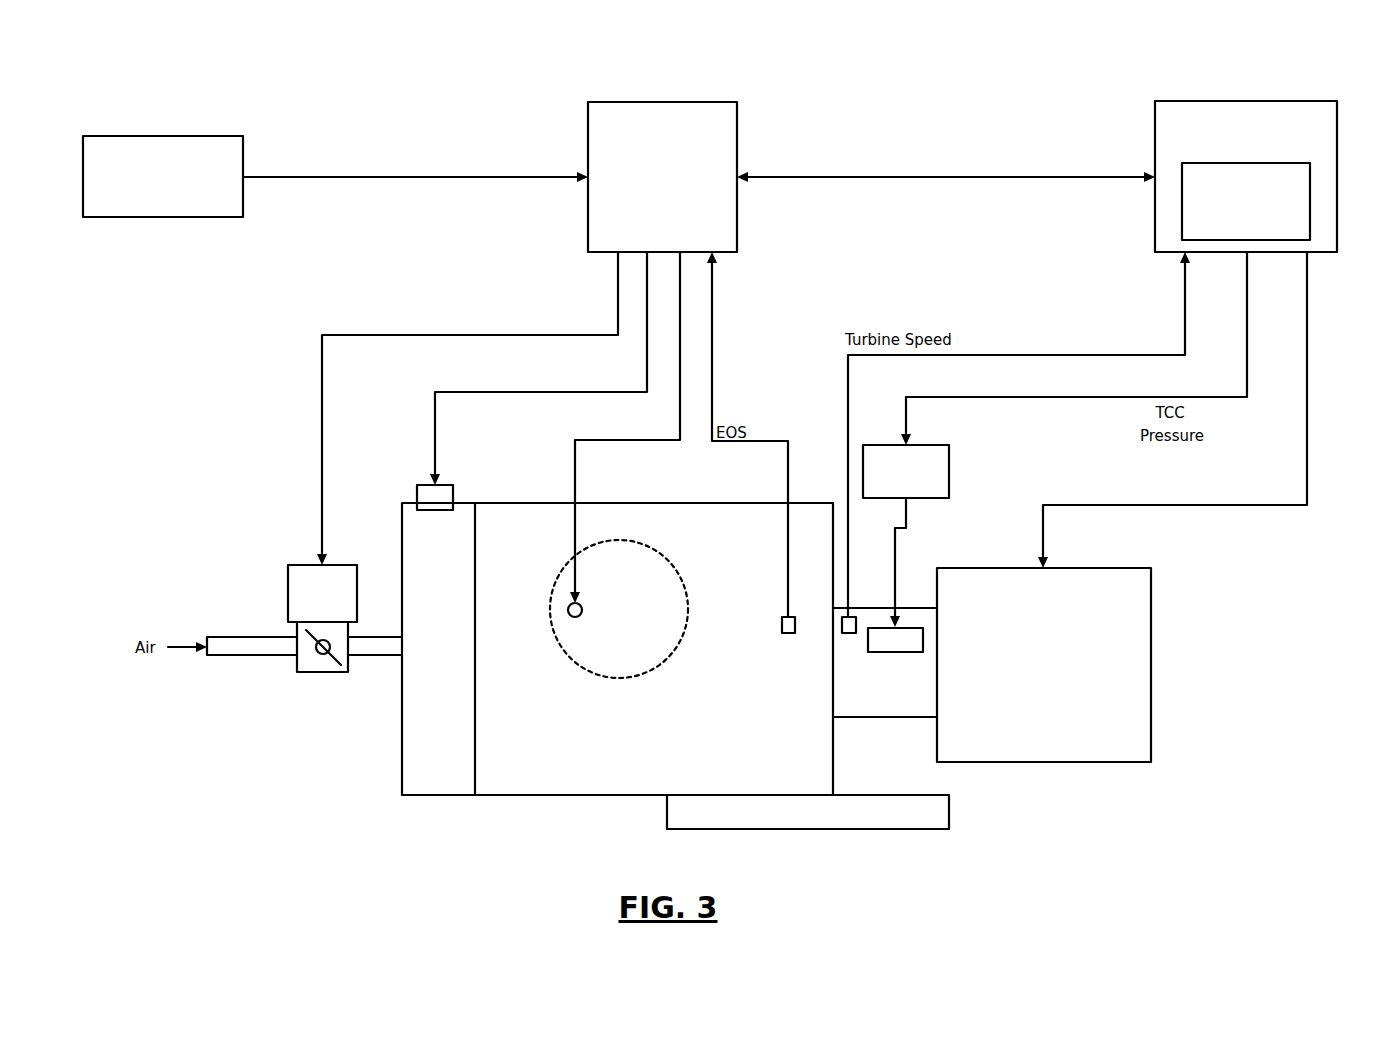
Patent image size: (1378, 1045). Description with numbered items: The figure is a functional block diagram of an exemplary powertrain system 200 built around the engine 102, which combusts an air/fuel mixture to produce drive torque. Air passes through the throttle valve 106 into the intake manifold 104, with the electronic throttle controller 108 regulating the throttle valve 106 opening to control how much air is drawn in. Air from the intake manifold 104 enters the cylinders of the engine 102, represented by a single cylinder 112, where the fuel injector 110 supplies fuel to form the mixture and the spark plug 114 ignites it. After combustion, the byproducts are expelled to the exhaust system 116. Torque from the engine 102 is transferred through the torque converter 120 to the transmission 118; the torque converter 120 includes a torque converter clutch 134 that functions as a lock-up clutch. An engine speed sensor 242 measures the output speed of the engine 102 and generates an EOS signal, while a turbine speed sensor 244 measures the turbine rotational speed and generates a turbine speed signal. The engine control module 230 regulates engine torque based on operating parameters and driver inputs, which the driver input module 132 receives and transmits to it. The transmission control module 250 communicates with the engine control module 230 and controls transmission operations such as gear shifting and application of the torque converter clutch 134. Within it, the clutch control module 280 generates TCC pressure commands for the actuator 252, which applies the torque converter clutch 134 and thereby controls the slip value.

The powertrain system 200 is at (1241, 48).
The driver input module 132 is at (163, 136).
The engine control module 230 is at (655, 102).
The transmission control module 250 is at (1155, 122).
The clutch control module 280 is at (1182, 203).
The actuator 252 is at (949, 468).
The torque converter clutch 134 is at (896, 652).
The engine 102 is at (592, 795).
The intake manifold 104 is at (402, 748).
The throttle valve 106 is at (322, 672).
The electronic throttle controller 108 is at (303, 565).
The fuel injector 110 is at (441, 485).
The cylinder 112 is at (618, 678).
The spark plug 114 is at (575, 617).
The engine speed sensor 242 is at (788, 633).
The turbine speed sensor 244 is at (848, 633).
The torque converter 120 is at (905, 608).
The transmission 118 is at (1151, 728).
The exhaust system 116 is at (810, 829).